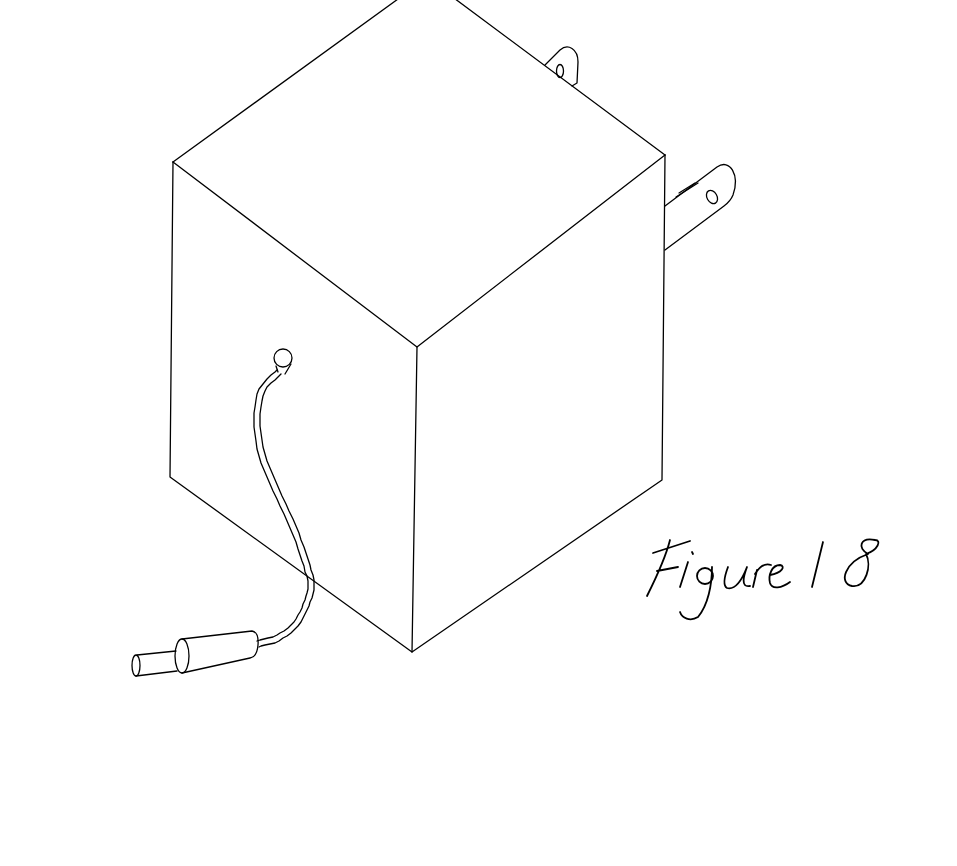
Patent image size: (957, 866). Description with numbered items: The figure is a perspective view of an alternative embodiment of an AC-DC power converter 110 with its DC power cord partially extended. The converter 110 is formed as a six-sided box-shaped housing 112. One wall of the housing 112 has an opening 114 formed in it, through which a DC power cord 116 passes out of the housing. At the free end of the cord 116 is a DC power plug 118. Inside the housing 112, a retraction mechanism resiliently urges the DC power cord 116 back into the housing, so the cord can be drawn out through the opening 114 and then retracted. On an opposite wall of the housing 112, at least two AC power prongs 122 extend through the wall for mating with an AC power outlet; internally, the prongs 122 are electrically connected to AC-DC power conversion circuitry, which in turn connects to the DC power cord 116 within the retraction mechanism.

The power converter 110 is at (53, 250).
The housing 112 is at (472, 580).
The opening 114 is at (272, 360).
The DC power cord 116 is at (292, 627).
The DC power plug 118 is at (155, 770).
The AC power prongs 122 is at (805, 276).